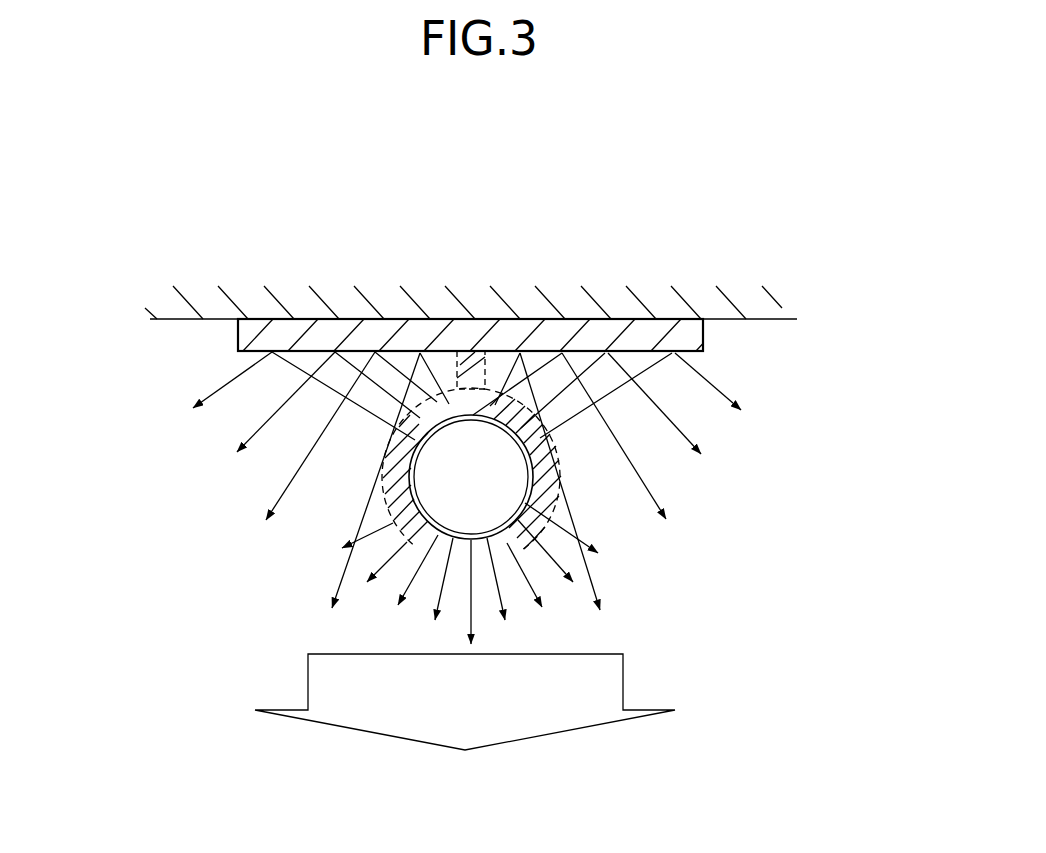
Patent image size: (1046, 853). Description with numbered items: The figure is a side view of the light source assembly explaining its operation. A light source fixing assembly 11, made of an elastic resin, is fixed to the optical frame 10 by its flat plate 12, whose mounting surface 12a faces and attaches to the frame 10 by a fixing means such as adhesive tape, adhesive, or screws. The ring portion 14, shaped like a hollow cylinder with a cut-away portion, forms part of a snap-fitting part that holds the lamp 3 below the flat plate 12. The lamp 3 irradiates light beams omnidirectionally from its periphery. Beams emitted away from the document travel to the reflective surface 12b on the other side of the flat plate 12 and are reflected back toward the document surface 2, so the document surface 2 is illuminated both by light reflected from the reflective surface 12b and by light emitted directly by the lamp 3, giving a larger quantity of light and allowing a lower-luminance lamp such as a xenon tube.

The optical frame 10 is at (738, 320).
The flat plate 12 is at (238, 330).
The mounting surface 12a is at (488, 319).
The reflective surface 12b is at (277, 353).
The ring portion 14 is at (384, 491).
The light source fixing assembly 11 is at (637, 514).
The lamp 3 is at (513, 478).
The surface of document 2 is at (535, 738).